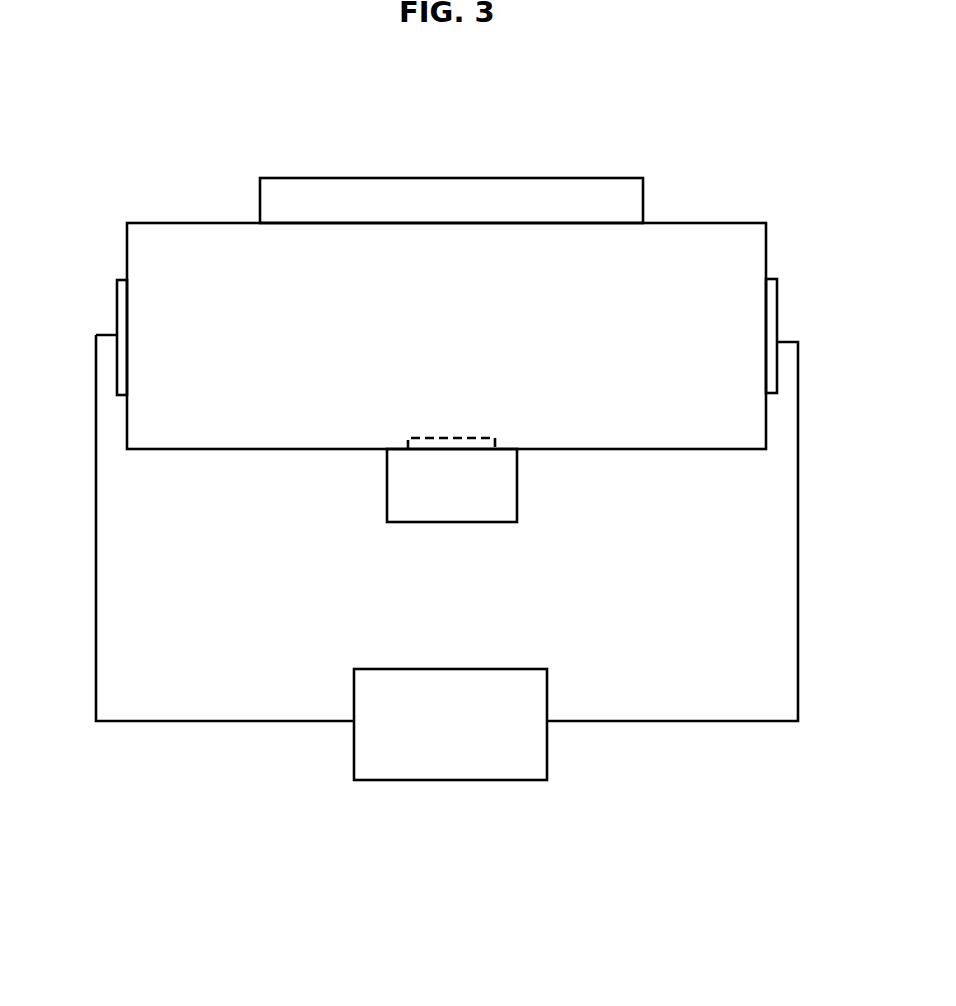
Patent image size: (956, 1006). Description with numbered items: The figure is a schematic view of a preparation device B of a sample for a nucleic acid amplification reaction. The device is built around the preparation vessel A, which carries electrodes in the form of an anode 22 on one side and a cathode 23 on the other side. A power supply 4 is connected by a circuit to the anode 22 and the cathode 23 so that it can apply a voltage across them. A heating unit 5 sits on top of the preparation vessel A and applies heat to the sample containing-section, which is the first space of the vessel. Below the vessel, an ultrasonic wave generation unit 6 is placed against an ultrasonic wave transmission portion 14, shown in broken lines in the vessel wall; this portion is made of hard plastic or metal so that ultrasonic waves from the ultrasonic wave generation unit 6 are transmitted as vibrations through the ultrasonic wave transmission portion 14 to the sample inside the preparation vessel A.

The preparation vessel A is at (665, 220).
The preparation device B is at (278, 765).
The heating unit 5 is at (495, 178).
The anode 22 is at (123, 278).
The cathode 23 is at (778, 302).
The ultrasonic wave transmission portion 14 is at (477, 432).
The ultrasonic wave generation unit 6 is at (386, 497).
The power supply 4 is at (548, 695).